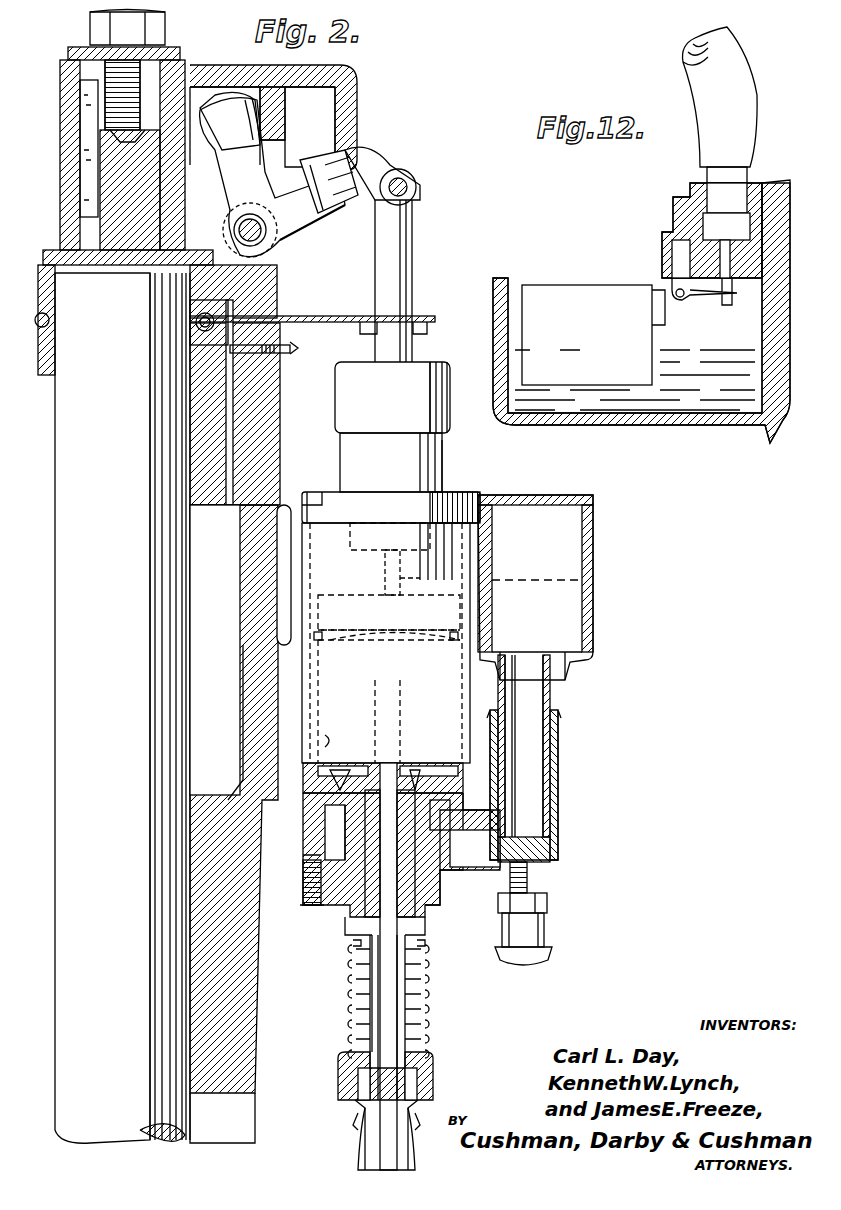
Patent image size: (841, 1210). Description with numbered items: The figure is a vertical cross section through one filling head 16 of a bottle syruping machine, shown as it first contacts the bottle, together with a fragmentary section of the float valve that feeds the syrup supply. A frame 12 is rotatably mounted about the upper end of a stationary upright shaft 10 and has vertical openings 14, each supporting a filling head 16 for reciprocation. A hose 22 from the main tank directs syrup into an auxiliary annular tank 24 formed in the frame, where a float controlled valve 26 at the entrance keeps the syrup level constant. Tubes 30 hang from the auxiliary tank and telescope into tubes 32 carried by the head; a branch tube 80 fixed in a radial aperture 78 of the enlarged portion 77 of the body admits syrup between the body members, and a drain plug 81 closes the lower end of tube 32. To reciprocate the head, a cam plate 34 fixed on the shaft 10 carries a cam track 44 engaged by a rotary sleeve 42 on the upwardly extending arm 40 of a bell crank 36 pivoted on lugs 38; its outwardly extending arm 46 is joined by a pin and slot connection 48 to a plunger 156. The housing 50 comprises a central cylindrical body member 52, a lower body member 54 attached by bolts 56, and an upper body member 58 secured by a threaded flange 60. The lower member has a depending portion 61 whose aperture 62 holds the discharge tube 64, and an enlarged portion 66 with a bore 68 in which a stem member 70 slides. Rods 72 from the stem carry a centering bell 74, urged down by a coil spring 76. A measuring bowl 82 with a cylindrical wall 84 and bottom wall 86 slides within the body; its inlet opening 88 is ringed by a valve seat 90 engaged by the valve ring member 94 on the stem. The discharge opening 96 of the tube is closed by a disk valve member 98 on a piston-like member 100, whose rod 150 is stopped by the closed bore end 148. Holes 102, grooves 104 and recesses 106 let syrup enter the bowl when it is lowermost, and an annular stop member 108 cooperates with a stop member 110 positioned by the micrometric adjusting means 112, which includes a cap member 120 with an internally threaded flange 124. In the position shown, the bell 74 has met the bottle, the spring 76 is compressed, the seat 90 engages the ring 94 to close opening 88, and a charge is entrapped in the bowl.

In FIG. 2, the central upright stationary shaft 10 is at (190, 673).
In FIG. 2, the frame 12 is at (276, 442).
In FIG. 12, the frame 12 is at (774, 431).
In FIG. 2, the vertically extending openings 14 is at (305, 592).
In FIG. 2, the filling head 16 is at (454, 460).
In FIG. 12, the hose 22 is at (698, 125).
In FIG. 2, the auxiliary annular tank 24 is at (570, 544).
In FIG. 12, the auxiliary annular tank 24 is at (675, 412).
In FIG. 12, the float controlled valve 26 is at (722, 308).
In FIG. 2, the tubes 30 is at (550, 698).
In FIG. 2, the tubes 32 is at (558, 766).
In FIG. 2, the circular cam plate 34 is at (366, 84).
In FIG. 2, the bell cranks 36 is at (300, 255).
In FIG. 2, the lugs 38 is at (258, 270).
In FIG. 2, the upwardly extending arm 40 is at (234, 177).
In FIG. 2, the rotary sleeve 42 is at (213, 107).
In FIG. 2, the cam track 44 is at (272, 122).
In FIG. 2, the outwardly extending arm 46 is at (318, 218).
In FIG. 2, the pin and slot connection 48 is at (378, 173).
In FIG. 2, the body or housing 50 is at (470, 482).
In FIG. 2, the central cylindrical body member 52 is at (310, 714).
In FIG. 2, the lower body member 54 is at (440, 896).
In FIG. 2, the bolts 56 is at (302, 905).
In FIG. 2, the upper body member 58 is at (340, 465).
In FIG. 2, the threaded flange 60 is at (277, 525).
In FIG. 2, the depending central portion 61 is at (345, 928).
In FIG. 2, the aperture 62 is at (353, 944).
In FIG. 2, the discharge tube 64 is at (380, 952).
In FIG. 2, the enlarged upwardly extending portion 66 is at (325, 838).
In FIG. 2, the central bore 68 is at (345, 852).
In FIG. 2, the stem member 70 is at (400, 828).
In FIG. 2, the rod members 72 is at (350, 1025).
In FIG. 2, the centering bell 74 is at (338, 1078).
In FIG. 2, the coil spring 76 is at (350, 1000).
In FIG. 2, the enlarged portion 77 is at (478, 796).
In FIG. 2, the radially extending aperture 78 is at (445, 844).
In FIG. 2, the branch tube 80 is at (458, 832).
In FIG. 2, the drain plug 81 is at (545, 925).
In FIG. 2, the measuring bowl 82 is at (310, 740).
In FIG. 2, the cylindrical wall 84 is at (315, 685).
In FIG. 2, the bottom wall 86 is at (332, 770).
In FIG. 2, the syrup inlet opening 88 is at (410, 770).
In FIG. 2, the annular valve seat 90 is at (358, 780).
In FIG. 2, the valve ring member 94 is at (303, 770).
In FIG. 2, the discharge opening 96 is at (375, 704).
In FIG. 2, the disk shaped valve member 98 is at (375, 677).
In FIG. 2, the piston-like member 100 is at (418, 675).
In FIG. 2, the radially extending holes 102 is at (317, 640).
In FIG. 2, the axially extending grooves 104 is at (305, 792).
In FIG. 2, the recesses 106 is at (308, 807).
In FIG. 2, the annular stop member 108 is at (357, 602).
In FIG. 2, the cooperating stop member 110 is at (355, 537).
In FIG. 2, the micrometric adjusting means 112 is at (456, 407).
In FIG. 2, the cap member 120 is at (338, 364).
In FIG. 2, the internally threaded annular flange 124 is at (335, 395).
In FIG. 2, the closed lower end 148 is at (383, 557).
In FIG. 2, the rod 150 is at (430, 576).
In FIG. 2, the plunger 156 is at (410, 246).